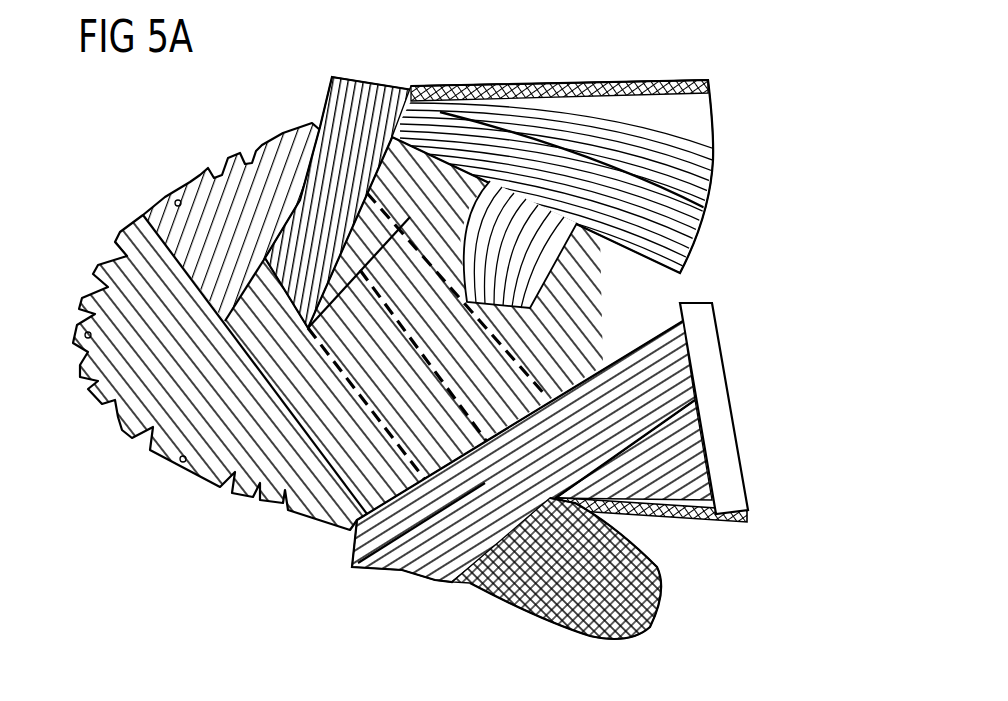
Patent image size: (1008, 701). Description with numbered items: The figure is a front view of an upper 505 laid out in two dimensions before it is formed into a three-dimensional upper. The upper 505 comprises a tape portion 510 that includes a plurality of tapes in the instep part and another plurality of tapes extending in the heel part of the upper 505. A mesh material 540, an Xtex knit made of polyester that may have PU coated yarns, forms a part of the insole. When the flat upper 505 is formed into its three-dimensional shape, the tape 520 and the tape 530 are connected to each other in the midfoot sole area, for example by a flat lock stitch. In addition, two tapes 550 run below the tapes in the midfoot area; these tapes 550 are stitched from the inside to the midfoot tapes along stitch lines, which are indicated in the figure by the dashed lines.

The upper 505 is at (160, 165).
The tape portion 510 is at (637, 460).
The tape 520 is at (386, 84).
The tape 530 is at (412, 565).
The mesh material 540 is at (633, 583).
The tapes 550 is at (462, 225).